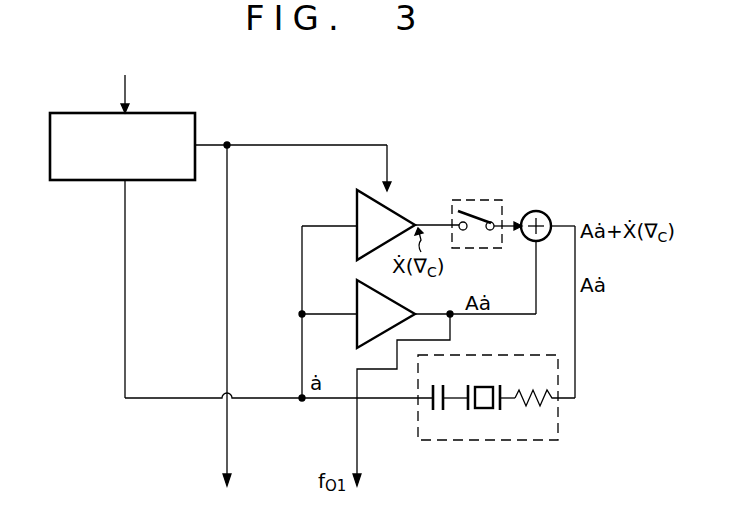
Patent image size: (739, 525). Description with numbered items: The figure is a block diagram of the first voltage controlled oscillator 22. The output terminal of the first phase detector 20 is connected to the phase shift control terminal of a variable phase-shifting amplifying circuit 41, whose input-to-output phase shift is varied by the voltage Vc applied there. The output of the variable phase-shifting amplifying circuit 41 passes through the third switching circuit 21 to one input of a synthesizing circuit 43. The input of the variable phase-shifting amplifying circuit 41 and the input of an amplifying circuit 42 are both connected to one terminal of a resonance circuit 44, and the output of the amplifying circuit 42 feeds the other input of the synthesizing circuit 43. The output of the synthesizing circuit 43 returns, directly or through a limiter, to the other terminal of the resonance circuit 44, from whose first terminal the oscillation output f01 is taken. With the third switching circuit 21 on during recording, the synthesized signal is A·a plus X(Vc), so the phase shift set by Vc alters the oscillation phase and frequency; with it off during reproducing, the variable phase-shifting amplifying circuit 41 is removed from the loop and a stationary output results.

The first phase detector 20 is at (156, 127).
The third switching circuit 21 is at (475, 199).
The first voltage controlled oscillator 22 is at (500, 382).
The variable phase-shifting amplifying circuit 41 is at (357, 208).
The amplifying circuit 42 is at (358, 304).
The synthesizing circuit 43 is at (534, 210).
The resonance circuit 44 is at (526, 440).